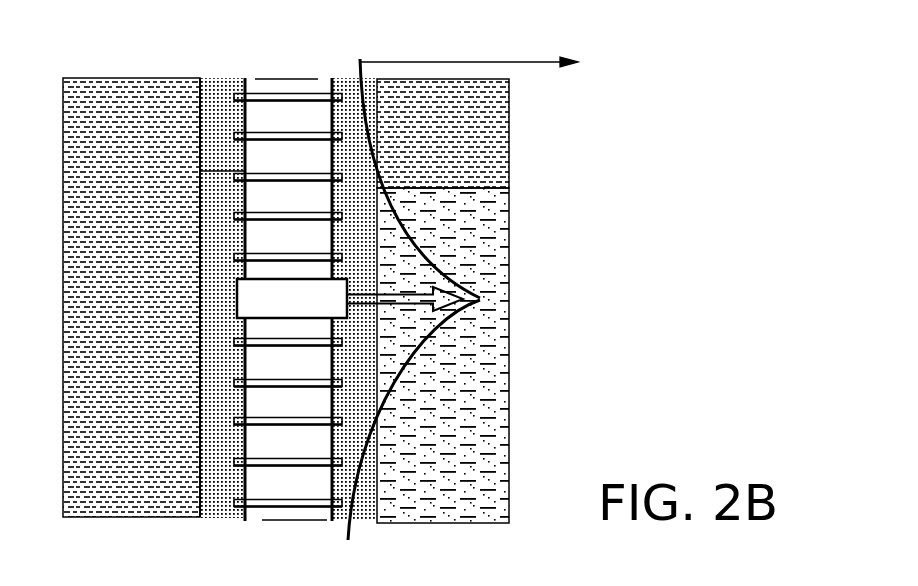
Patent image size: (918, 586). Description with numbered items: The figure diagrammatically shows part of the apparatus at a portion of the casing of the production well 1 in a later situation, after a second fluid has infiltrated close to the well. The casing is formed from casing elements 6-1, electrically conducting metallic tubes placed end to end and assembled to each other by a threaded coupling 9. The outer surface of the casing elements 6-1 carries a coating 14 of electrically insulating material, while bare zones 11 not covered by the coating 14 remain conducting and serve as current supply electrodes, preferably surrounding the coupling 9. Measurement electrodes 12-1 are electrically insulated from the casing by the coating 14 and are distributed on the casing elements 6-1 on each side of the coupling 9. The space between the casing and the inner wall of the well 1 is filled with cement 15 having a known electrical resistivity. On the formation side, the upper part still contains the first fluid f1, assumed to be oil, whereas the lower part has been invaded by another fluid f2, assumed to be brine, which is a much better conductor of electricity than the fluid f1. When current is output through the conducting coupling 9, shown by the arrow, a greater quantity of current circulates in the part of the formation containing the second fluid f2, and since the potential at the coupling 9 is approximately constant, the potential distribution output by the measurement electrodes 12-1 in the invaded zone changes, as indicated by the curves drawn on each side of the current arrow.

The production well 1 is at (210, 91).
The coating 14 is at (272, 108).
The casing elements 6-1 is at (309, 117).
The measurement electrodes 12-1 is at (198, 170).
The threaded coupling 9 is at (263, 287).
The bare zones 11 is at (262, 307).
The cement 15 is at (223, 438).
The fluid f1 is at (477, 133).
The second fluid f2 is at (497, 382).